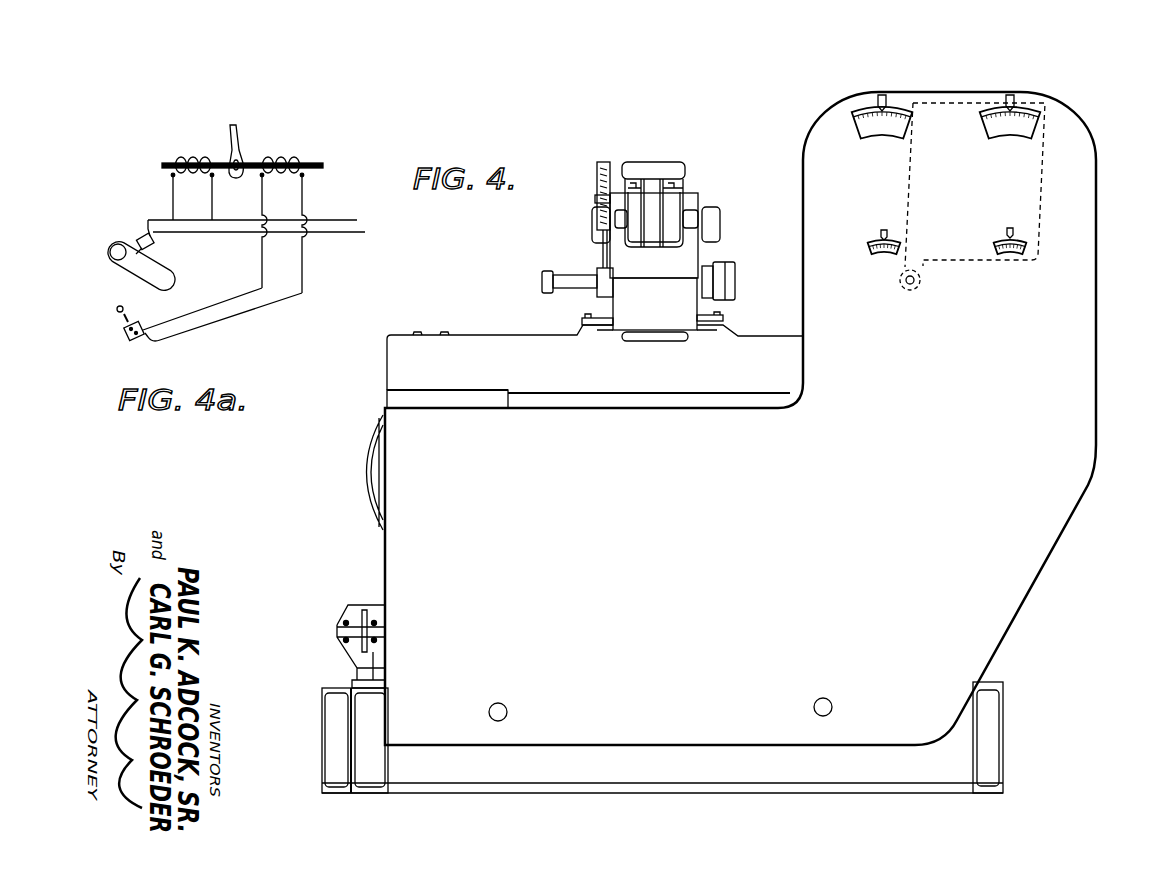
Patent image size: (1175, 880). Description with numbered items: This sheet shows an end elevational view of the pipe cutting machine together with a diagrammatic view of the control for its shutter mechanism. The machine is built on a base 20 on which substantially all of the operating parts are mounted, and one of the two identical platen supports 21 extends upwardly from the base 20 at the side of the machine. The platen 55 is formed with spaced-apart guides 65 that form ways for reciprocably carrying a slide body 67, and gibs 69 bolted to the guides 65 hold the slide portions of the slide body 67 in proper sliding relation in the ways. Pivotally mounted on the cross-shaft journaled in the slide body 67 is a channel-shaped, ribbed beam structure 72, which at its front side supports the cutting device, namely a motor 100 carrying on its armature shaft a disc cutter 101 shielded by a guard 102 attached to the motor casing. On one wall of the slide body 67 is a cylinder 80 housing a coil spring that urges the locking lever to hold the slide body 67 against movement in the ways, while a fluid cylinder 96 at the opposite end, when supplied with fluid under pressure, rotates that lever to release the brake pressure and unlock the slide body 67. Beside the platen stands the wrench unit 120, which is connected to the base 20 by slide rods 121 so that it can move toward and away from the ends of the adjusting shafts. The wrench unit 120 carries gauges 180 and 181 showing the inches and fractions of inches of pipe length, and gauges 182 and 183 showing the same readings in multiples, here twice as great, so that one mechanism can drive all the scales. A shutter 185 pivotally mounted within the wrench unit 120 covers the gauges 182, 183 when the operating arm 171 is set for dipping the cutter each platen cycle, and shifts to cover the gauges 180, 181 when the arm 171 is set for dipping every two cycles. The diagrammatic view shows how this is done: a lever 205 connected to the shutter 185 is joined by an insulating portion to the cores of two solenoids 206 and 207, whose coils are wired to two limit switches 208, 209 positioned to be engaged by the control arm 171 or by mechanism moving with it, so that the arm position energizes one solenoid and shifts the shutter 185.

In FIG. 4, the base 20 is at (1012, 691).
In FIG. 4, the platen support 21 is at (347, 474).
In FIG. 4, the platen 55 is at (488, 328).
In FIG. 4, the guides 65 is at (587, 325).
In FIG. 4, the slide body 67 is at (662, 316).
In FIG. 4, the gibs 69 is at (728, 318).
In FIG. 4, the beam structure 72 is at (668, 152).
In FIG. 4, the cylinder 80 is at (567, 284).
In FIG. 4, the fluid cylinder 96 is at (732, 282).
In FIG. 4, the motor 100 is at (657, 237).
In FIG. 4, the disc cutter 101 is at (603, 256).
In FIG. 4, the guard 102 is at (603, 162).
In FIG. 4, the wrench unit 120 is at (1105, 364).
In FIG. 4, the slide rods 121 is at (504, 705).
In FIG. 4, the gauge 180 is at (866, 128).
In FIG. 4, the gauge 181 is at (877, 246).
In FIG. 4, the gauge 182 is at (1034, 113).
In FIG. 4, the gauge 183 is at (1020, 238).
In FIG. 4, the shutter 185 is at (917, 205).
In FIG. 4A, the operating arm 171 is at (163, 272).
In FIG. 4A, the lever 205 is at (243, 141).
In FIG. 4A, the solenoid 206 is at (199, 140).
In FIG. 4A, the solenoid 207 is at (287, 157).
In FIG. 4A, the limit switch 208 is at (129, 333).
In FIG. 4A, the limit switch 209 is at (139, 236).